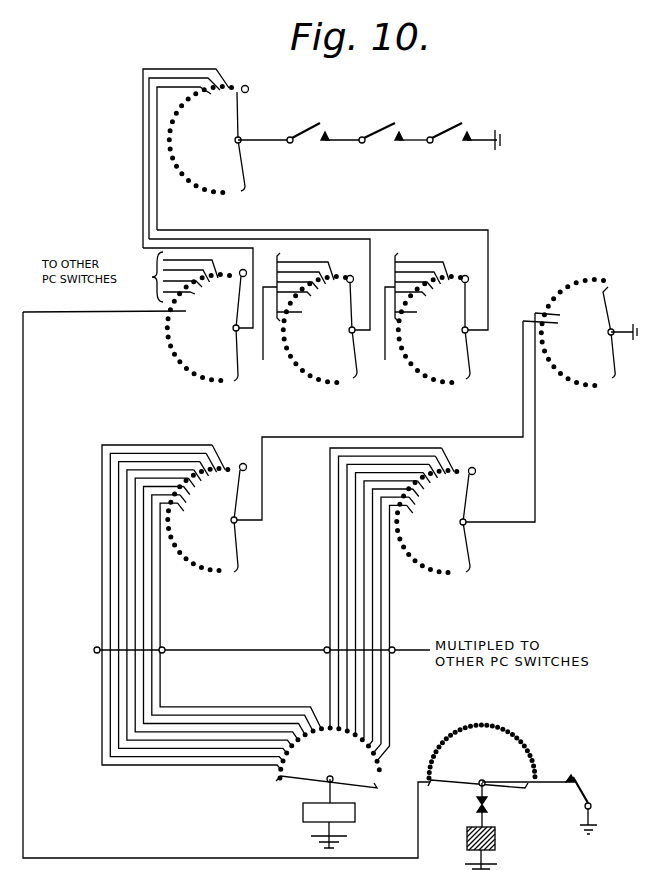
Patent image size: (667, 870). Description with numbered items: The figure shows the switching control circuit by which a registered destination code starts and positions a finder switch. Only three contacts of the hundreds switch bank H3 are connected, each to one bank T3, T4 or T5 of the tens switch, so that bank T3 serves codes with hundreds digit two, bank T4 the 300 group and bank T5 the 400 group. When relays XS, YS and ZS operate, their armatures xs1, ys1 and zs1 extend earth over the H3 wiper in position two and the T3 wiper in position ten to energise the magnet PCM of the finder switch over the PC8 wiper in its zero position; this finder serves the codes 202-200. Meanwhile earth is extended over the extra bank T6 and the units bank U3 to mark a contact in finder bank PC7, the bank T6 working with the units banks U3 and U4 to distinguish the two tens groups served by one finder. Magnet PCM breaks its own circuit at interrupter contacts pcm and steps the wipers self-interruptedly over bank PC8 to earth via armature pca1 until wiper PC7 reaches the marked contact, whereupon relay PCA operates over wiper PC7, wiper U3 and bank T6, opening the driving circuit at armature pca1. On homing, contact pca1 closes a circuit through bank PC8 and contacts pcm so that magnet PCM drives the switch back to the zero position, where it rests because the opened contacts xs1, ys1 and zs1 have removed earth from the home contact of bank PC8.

The hundreds switch wiper and bank H3 is at (208, 139).
The armature of relay XS xs1 is at (324, 143).
The armature of relay YS ys1 is at (394, 143).
The armature of relay ZS zs1 is at (463, 143).
The tens switch bank T3 is at (206, 326).
The tens switch bank T4 is at (320, 329).
The tens switch bank T5 is at (434, 329).
The extra tens switch bank T6 is at (589, 333).
The codes served by finder switch 202-200 is at (111, 316).
The hundreds group 300 is at (271, 337).
The hundreds group 400 is at (386, 337).
The units switch bank and wiper U3 is at (207, 518).
The units switch bank and wiper U4 is at (436, 520).
The finder switch bank and wiper PC7 is at (328, 758).
The finder switch bank and wiper PC8 is at (481, 756).
The relay PCA is at (293, 812).
The interrupter contacts of magnet PCM pcm is at (498, 805).
The magnet of finder switch PCM is at (496, 848).
The armature of relay PCA pca1 is at (550, 804).